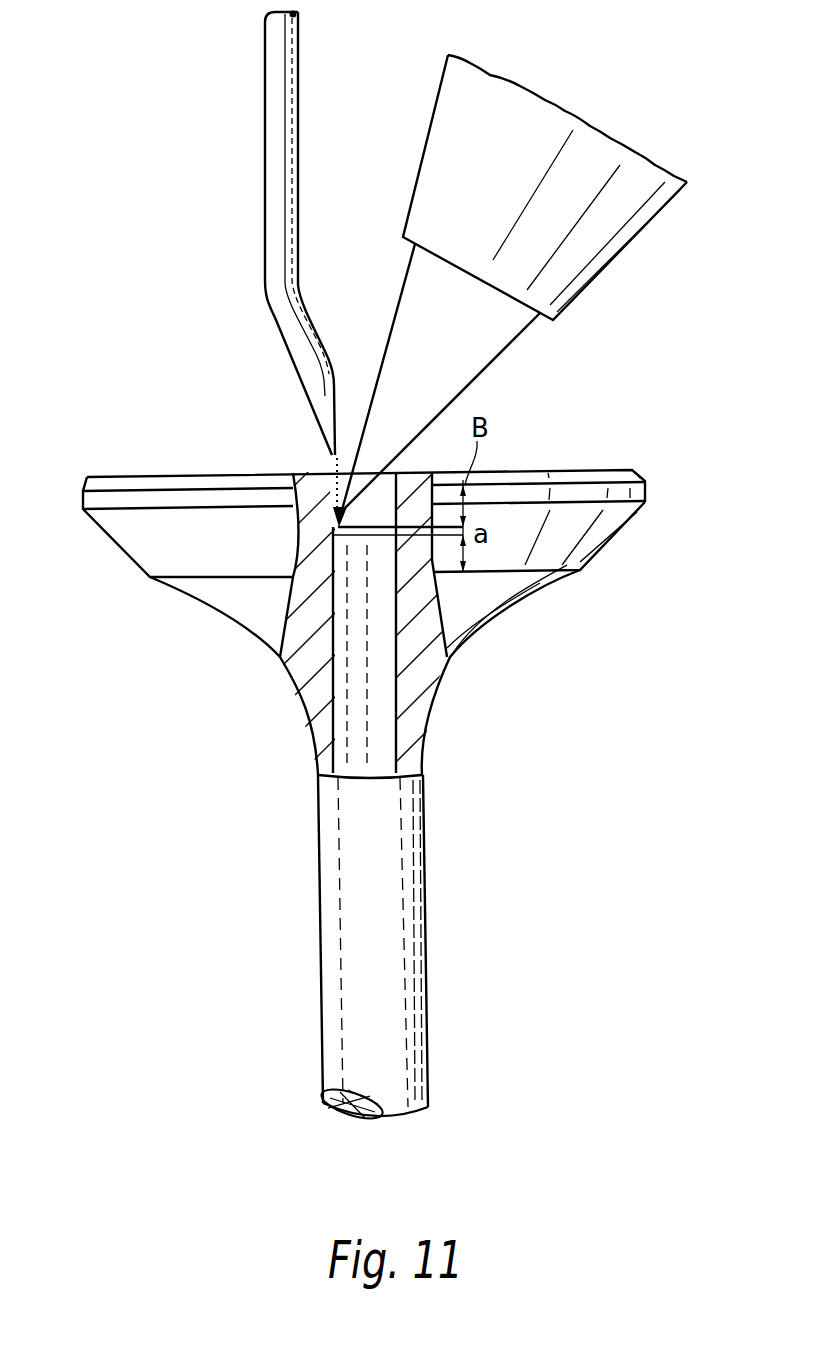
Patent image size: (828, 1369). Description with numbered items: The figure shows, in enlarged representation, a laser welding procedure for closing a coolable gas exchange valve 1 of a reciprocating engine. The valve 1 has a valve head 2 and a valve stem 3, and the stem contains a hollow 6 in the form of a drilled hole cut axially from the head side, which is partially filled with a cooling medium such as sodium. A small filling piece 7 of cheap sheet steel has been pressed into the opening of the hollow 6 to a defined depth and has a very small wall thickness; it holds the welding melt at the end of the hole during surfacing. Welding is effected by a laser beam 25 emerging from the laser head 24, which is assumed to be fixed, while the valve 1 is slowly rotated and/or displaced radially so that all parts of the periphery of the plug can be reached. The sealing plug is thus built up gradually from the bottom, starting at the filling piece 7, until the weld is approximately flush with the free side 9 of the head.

The valve 1 is at (428, 935).
The valve head 2 is at (177, 558).
The valve stem 3 is at (390, 884).
The hollow 6 is at (387, 675).
The filling piece 7 is at (368, 540).
The free side of the head 9 is at (515, 470).
The laser head 24 is at (504, 161).
The laser beam 25 is at (482, 337).